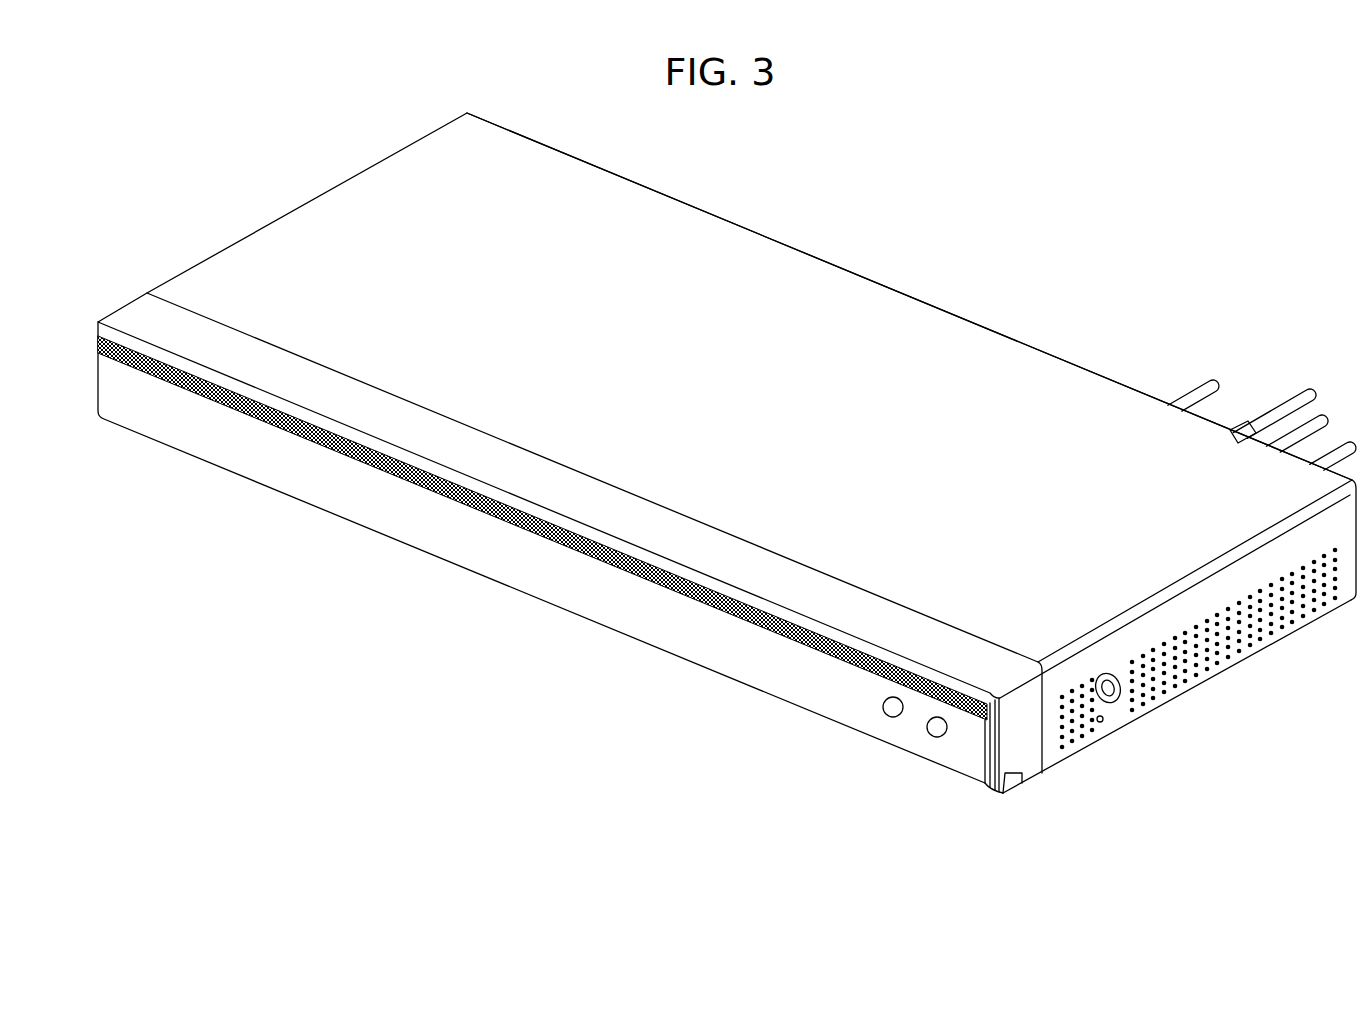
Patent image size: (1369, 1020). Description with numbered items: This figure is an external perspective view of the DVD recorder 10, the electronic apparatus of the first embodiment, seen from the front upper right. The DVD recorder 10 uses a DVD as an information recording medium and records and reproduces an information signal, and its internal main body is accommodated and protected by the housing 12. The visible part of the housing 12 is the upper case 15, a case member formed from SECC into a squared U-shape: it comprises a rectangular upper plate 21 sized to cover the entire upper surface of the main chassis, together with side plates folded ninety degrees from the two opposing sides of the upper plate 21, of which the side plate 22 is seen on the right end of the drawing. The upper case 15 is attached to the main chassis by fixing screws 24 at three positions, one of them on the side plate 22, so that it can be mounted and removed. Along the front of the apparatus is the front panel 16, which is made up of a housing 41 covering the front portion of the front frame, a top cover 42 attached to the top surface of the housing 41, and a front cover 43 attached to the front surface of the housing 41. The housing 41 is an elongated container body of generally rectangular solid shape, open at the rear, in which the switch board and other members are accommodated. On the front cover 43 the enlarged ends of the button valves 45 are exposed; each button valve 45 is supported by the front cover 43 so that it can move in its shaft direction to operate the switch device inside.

The DVD recorder 10 is at (497, 594).
The housing 12 is at (278, 203).
The upper case 15 is at (880, 272).
The front panel 16 is at (992, 800).
The upper plate 21 is at (1003, 352).
The side plate 22 is at (1250, 652).
The fixing screw 24 is at (1120, 702).
The housing 41 is at (1022, 775).
The top cover 42 is at (303, 392).
The front cover 43 is at (780, 688).
The button valve 45 is at (937, 727).